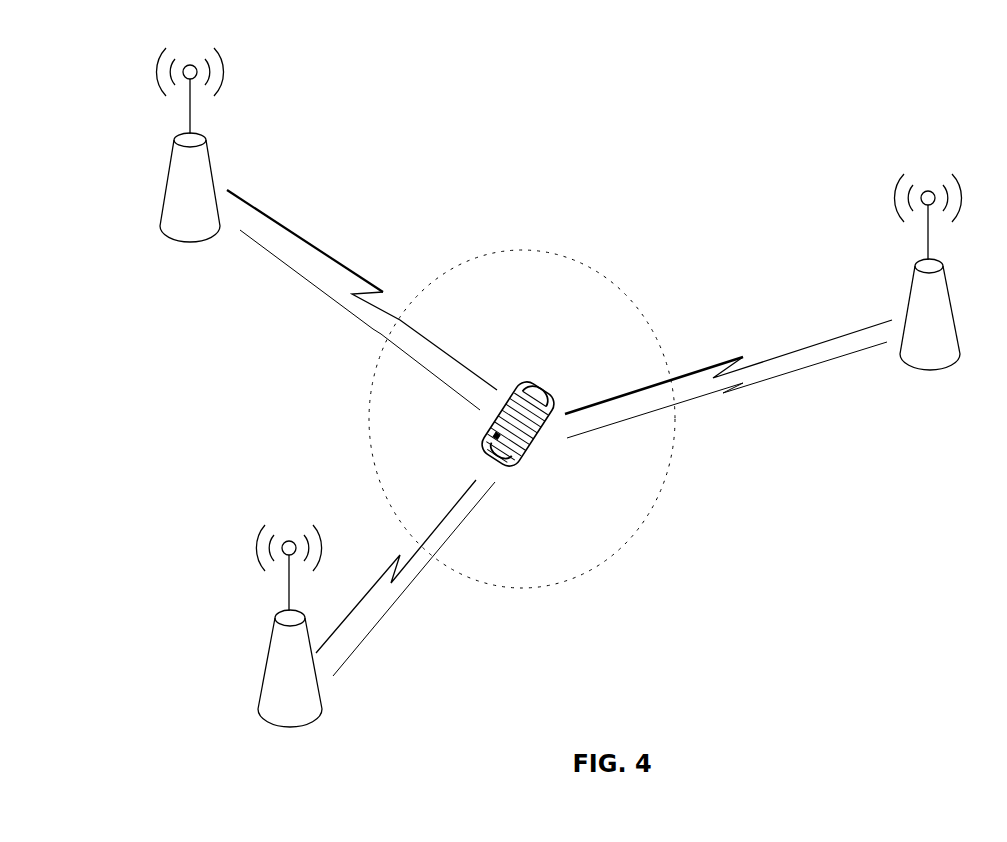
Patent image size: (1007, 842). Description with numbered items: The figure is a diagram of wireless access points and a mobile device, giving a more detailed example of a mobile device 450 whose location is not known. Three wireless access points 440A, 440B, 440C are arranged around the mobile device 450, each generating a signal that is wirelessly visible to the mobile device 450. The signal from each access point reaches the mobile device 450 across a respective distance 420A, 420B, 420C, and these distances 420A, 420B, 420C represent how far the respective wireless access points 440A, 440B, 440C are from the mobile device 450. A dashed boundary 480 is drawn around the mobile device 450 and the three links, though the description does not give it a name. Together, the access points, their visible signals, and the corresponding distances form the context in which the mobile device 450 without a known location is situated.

The wireless access point 440A is at (189, 160).
The wireless access point 440B is at (289, 643).
The wireless access point 440C is at (927, 291).
The distance 420A is at (355, 319).
The distance 420B is at (386, 618).
The distance 420C is at (731, 363).
The mobile device 450 is at (556, 378).
The coverage / location uncertainty area 480 is at (607, 560).